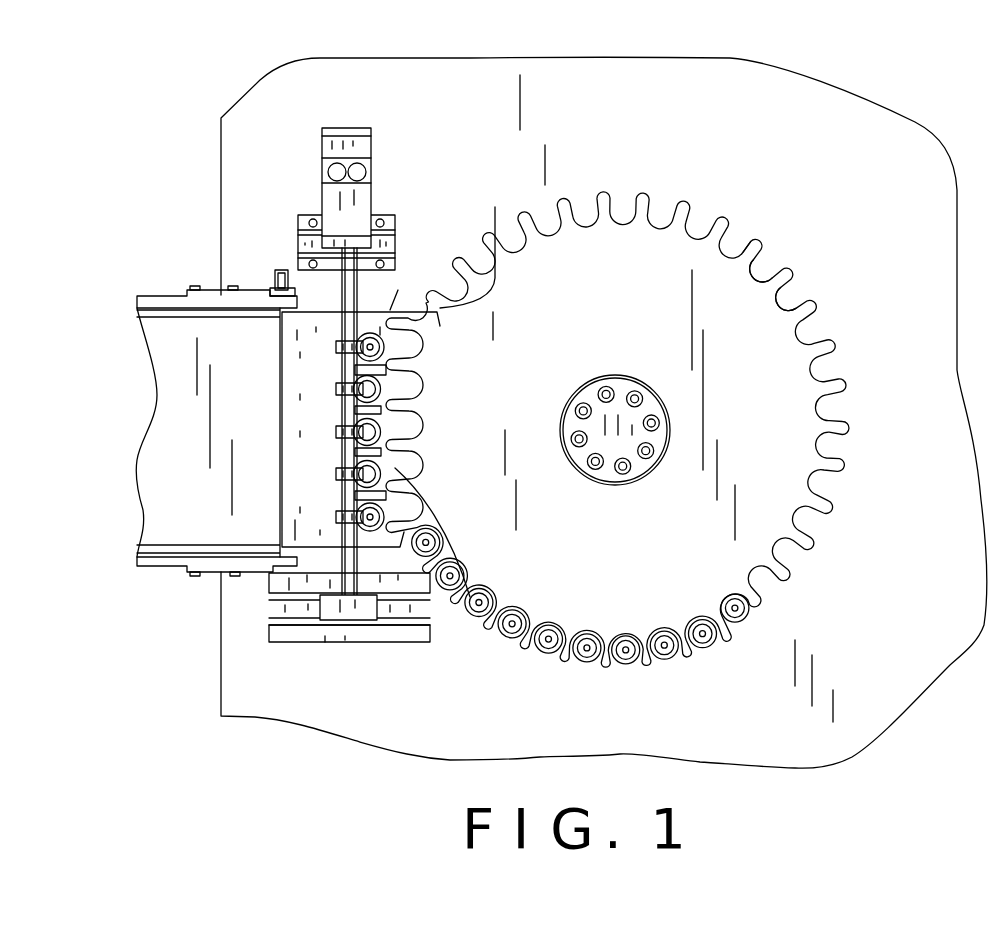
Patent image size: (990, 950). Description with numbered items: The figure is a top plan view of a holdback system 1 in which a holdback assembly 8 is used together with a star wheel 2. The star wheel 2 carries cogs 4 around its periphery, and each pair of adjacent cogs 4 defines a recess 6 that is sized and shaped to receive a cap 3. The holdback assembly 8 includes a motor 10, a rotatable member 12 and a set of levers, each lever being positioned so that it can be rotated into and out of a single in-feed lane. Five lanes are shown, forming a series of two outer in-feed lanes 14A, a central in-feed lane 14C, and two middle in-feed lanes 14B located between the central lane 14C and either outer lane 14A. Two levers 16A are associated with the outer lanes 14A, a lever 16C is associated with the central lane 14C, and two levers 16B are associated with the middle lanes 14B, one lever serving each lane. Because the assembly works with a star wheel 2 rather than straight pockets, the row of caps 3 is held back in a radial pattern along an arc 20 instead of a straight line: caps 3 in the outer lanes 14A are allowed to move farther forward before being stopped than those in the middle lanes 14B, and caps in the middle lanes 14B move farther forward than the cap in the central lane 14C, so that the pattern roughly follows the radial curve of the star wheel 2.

The holdback system 1 is at (536, 34).
The star wheel 2 is at (612, 327).
The cap 3 is at (453, 572).
The cogs 4 is at (722, 222).
The recesses 6 is at (772, 264).
The holdback assembly 8 is at (285, 237).
The motor 10 is at (352, 193).
The rotatable member 12 is at (367, 279).
The arc 20 is at (450, 387).
The outer in-feed lanes 14A is at (332, 347).
The middle in-feed lanes 14B is at (332, 390).
The central in-feed lane 14C is at (332, 433).
The levers for outer lanes 16A is at (296, 354).
The levers for middle lanes 16B is at (296, 399).
The lever for central lane 16C is at (296, 435).